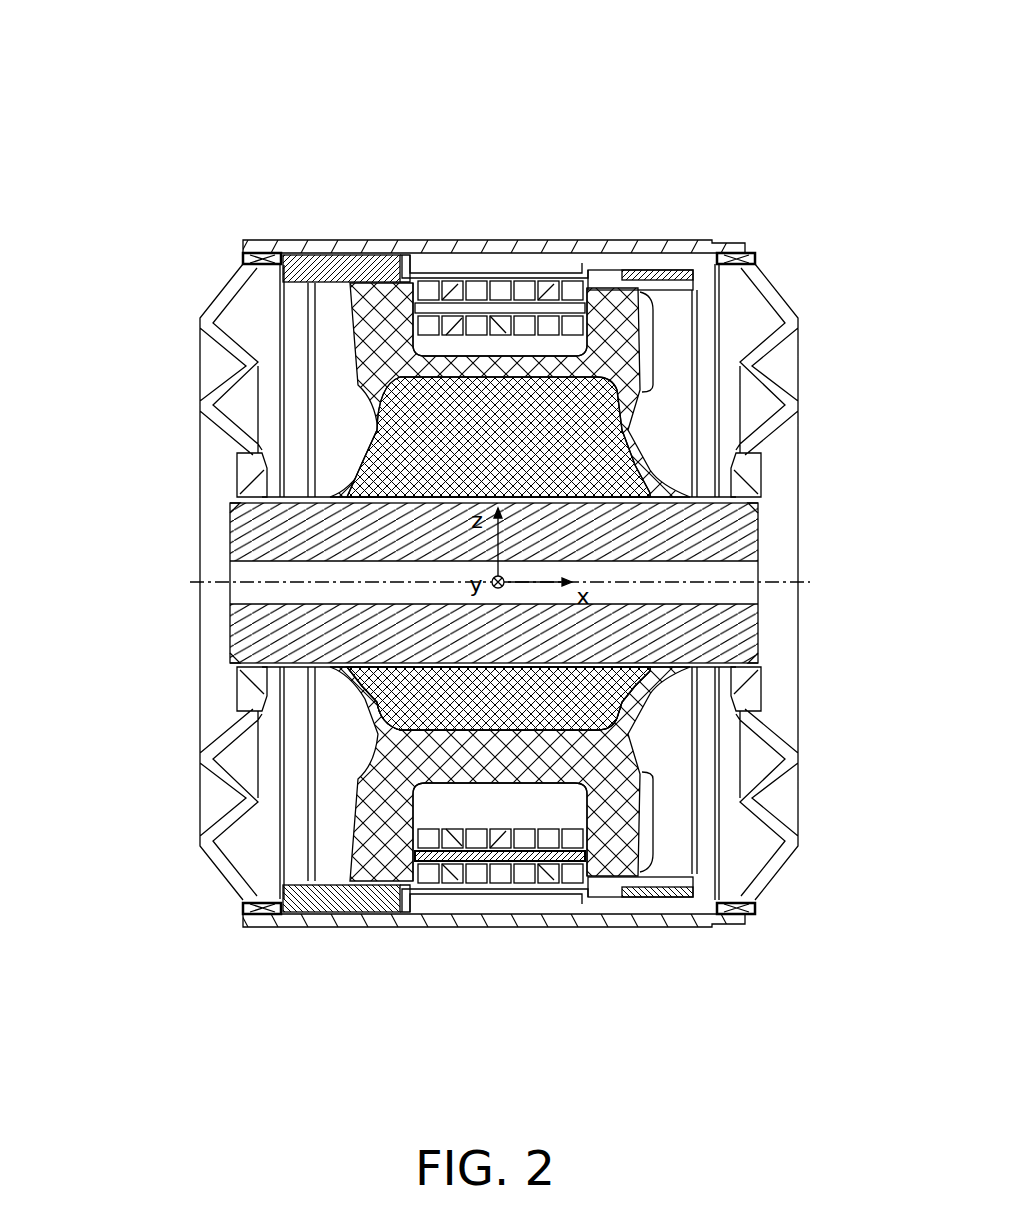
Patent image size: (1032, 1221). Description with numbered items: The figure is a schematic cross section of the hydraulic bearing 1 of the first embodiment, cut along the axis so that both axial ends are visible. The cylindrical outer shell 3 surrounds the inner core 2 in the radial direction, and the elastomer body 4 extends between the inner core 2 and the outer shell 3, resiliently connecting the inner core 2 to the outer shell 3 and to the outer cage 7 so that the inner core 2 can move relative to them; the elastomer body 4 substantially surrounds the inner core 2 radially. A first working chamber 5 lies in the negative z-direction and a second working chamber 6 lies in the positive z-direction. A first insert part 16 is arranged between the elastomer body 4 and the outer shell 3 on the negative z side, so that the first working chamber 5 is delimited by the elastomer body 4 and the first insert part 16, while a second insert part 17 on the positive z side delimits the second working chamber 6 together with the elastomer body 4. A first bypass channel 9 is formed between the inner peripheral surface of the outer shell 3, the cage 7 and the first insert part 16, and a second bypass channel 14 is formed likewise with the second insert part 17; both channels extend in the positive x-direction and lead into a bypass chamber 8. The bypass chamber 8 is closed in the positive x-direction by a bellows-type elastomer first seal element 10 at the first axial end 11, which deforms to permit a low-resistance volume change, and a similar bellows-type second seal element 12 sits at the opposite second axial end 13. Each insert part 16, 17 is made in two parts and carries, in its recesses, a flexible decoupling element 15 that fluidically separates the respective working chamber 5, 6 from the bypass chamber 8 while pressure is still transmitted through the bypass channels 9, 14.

The hydraulic bearing 1 is at (718, 112).
The inner core 2 is at (430, 712).
The outer shell 3 is at (322, 245).
The elastomer body 4 is at (390, 342).
The first working chamber 5 is at (470, 807).
The second working chamber 6 is at (533, 342).
The outer cage 7 is at (330, 897).
The bypass chamber 8 is at (680, 415).
The first bypass channel 9 is at (575, 898).
The first seal element 10 is at (778, 523).
The first axial end 11 is at (800, 572).
The second seal element 12 is at (223, 363).
The second axial end 13 is at (195, 568).
The second bypass channel 14 is at (633, 262).
The decoupling element 15 is at (500, 305).
The first insert part 16 is at (410, 890).
The second insert part 17 is at (463, 283).